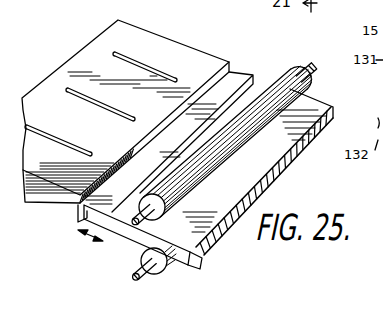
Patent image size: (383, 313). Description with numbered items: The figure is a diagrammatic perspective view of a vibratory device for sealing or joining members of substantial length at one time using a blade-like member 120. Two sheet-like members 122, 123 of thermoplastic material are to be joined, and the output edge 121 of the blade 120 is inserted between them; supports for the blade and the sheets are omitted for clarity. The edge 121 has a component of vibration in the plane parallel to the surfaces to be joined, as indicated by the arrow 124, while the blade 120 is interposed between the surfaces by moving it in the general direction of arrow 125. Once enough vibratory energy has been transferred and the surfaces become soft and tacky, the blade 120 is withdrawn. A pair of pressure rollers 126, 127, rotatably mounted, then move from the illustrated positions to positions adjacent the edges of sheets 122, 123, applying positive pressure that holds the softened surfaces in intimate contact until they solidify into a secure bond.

The blade-like member 120 is at (215, 57).
The output edge 121 is at (72, 213).
The sheet-like member 122 is at (131, 229).
The sheet-like member 123 is at (226, 236).
The arrow 124 is at (92, 237).
The arrow 125 is at (139, 103).
The pressure roller 126 is at (168, 262).
The pressure roller 127 is at (287, 77).